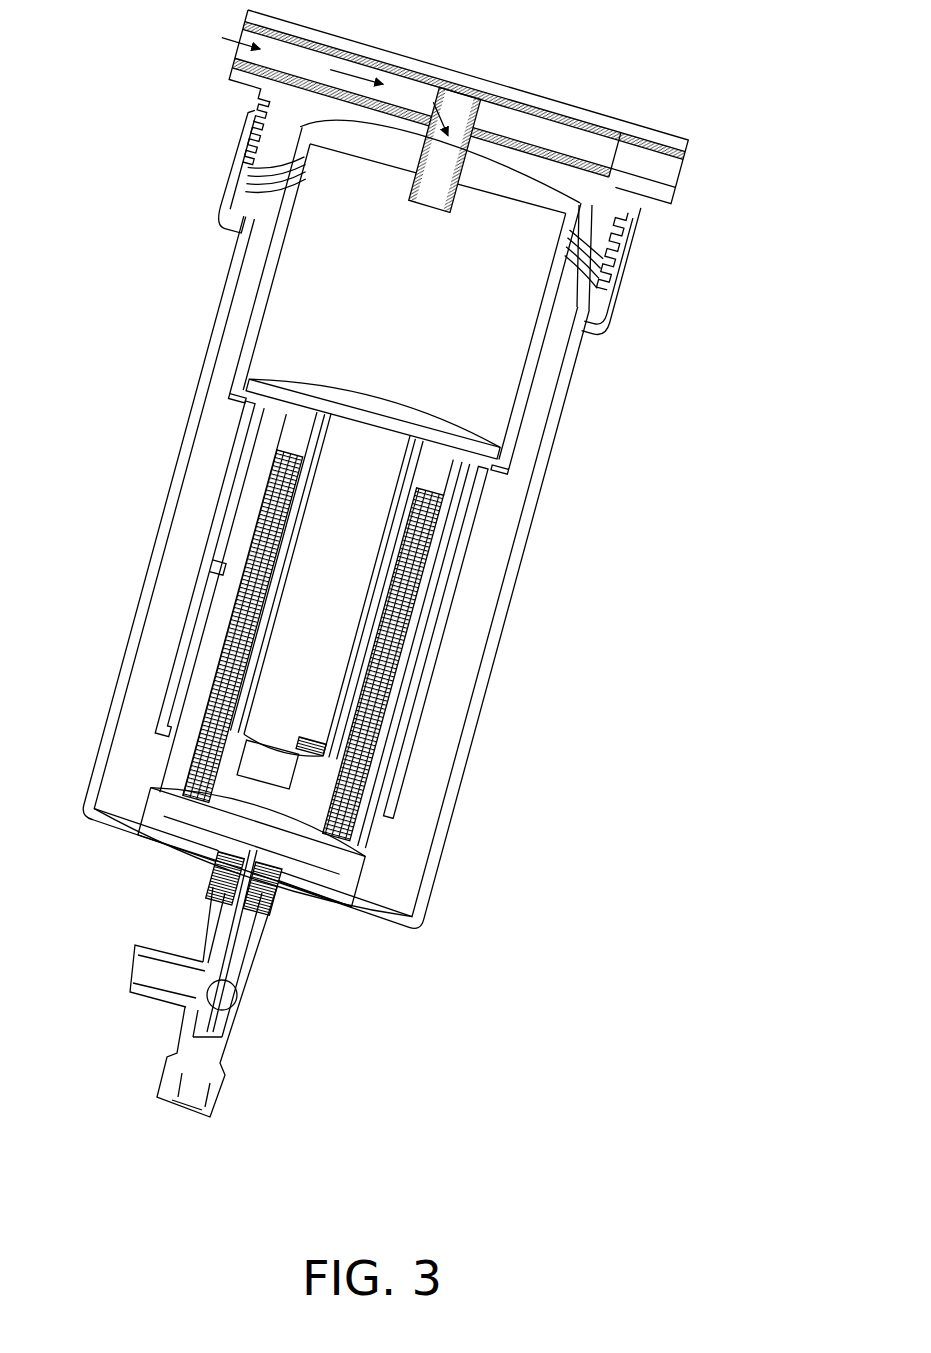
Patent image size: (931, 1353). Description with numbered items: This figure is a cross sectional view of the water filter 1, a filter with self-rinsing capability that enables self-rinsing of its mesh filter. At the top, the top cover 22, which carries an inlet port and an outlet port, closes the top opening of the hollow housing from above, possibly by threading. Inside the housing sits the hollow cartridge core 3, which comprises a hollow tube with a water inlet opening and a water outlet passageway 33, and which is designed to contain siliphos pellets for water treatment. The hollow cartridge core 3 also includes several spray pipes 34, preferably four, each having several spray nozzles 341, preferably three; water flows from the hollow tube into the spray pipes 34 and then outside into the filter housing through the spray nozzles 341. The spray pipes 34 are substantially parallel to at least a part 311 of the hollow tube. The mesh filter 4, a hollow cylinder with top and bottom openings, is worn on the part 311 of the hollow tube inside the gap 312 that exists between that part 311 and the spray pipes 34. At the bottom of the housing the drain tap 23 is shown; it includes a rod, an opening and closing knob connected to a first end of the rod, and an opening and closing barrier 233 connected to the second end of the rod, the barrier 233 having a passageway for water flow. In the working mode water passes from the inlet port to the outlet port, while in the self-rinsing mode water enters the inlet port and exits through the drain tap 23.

The water filter 1 is at (727, 342).
The top cover 22 is at (640, 128).
The hollow cartridge core 3 is at (532, 381).
The spray nozzles 341 is at (228, 495).
The gap 312 is at (207, 640).
The part of the hollow tube 311 is at (400, 535).
The water outlet passageway 33 is at (255, 775).
The spray pipes 34 is at (440, 635).
The mesh filter 4 is at (355, 800).
The opening and closing barrier 233 is at (220, 845).
The drain tap 23 is at (215, 975).